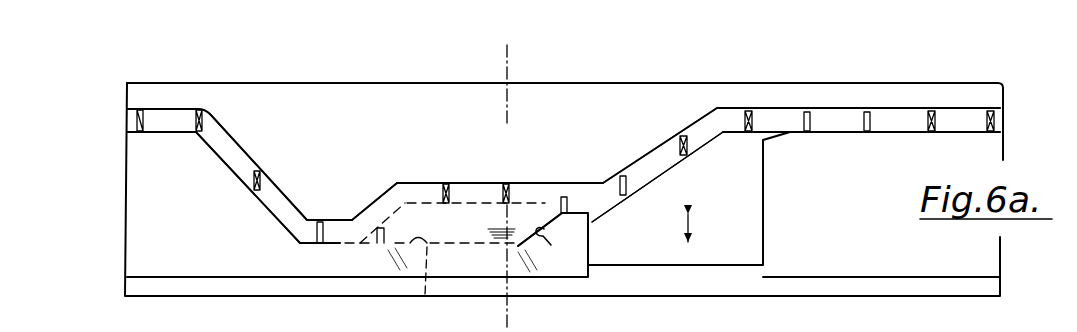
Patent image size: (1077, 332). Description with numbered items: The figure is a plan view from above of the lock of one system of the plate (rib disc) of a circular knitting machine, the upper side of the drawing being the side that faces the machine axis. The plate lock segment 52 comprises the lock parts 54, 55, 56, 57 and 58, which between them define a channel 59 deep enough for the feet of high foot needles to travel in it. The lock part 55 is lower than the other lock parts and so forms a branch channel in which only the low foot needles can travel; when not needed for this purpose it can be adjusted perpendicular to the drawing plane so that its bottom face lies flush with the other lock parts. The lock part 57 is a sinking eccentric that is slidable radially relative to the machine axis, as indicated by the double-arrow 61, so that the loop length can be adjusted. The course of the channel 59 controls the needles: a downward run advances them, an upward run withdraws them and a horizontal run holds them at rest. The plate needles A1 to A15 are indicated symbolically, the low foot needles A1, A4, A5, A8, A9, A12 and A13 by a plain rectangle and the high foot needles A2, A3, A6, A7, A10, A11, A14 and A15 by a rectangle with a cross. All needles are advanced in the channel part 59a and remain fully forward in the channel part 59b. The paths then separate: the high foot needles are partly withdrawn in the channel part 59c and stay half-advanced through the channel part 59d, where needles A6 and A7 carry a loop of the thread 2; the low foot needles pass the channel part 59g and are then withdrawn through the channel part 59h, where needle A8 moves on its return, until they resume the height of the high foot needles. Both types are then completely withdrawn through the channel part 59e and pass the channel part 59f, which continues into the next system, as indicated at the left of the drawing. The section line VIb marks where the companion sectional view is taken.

The thread 2 is at (579, 190).
The plate lock segment 52 is at (634, 82).
The lock part 54 is at (408, 115).
The lock part 55 is at (473, 228).
The lock part 56 is at (372, 268).
The lock part (sinking eccentric) 57 is at (697, 266).
The lock part 58 is at (849, 266).
The channel 59 is at (898, 110).
The channel part 59a is at (275, 205).
The channel part 59b is at (337, 240).
The channel part 59c is at (365, 205).
The channel part 59d is at (470, 185).
The channel part 59e is at (655, 170).
The channel part 59f is at (830, 131).
The channel part 59g is at (429, 286).
The channel part 59h is at (550, 241).
The double-arrow 61 is at (696, 228).
The section line VI-b VIb is at (510, 61).
The plate needle (low foot needle) A1 is at (144, 109).
The plate needle (high foot needle) A2 is at (204, 109).
The plate needle (high foot needle) A3 is at (262, 166).
The plate needle (low foot needle) A4 is at (319, 219).
The plate needle (low foot needle) A5 is at (379, 223).
The plate needle (high foot needle) A6 is at (449, 181).
The plate needle (high foot needle) A7 is at (509, 181).
The plate needle (low foot needle) A8 is at (562, 186).
The plate needle (low foot needle) A9 is at (619, 169).
The plate needle (high foot needle) A10 is at (678, 132).
The plate needle (high foot needle) A11 is at (753, 109).
The plate needle (low foot needle) A12 is at (813, 109).
The plate needle (low foot needle) A13 is at (875, 109).
The plate needle (high foot needle) A14 is at (933, 109).
The plate needle (high foot needle) A15 is at (988, 109).